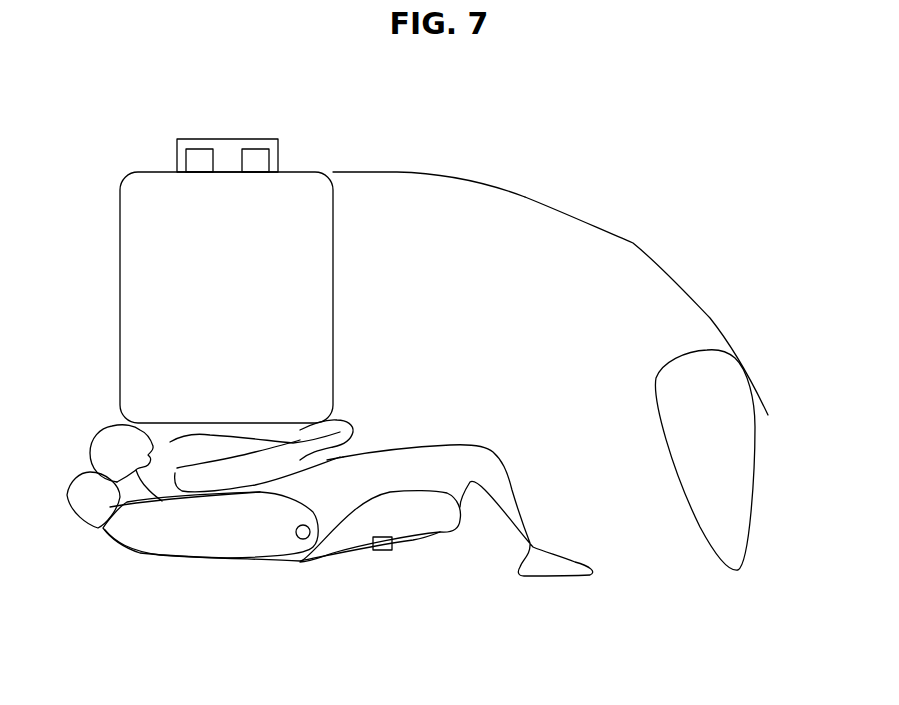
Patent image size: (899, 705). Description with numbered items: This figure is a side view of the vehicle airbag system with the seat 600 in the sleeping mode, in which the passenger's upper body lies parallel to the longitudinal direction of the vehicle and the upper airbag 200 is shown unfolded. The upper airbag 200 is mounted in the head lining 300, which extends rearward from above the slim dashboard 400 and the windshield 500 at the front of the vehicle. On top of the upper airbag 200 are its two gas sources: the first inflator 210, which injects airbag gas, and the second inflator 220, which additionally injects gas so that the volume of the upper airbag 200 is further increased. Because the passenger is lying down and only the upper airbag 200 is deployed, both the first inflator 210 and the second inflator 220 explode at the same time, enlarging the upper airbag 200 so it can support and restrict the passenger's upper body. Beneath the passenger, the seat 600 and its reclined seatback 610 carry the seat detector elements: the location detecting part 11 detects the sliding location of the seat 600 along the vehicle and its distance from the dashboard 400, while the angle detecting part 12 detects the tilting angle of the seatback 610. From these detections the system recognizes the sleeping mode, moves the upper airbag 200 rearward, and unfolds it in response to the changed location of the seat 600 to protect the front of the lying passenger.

The upper airbag 200 is at (137, 283).
The first inflator 210 is at (199, 160).
The second inflator 220 is at (259, 160).
The head lining 300 is at (397, 170).
The windshield 500 is at (633, 242).
The dashboard 400 is at (743, 467).
The seat 600 is at (347, 568).
The seatback 610 is at (217, 541).
The location detecting part 11 is at (382, 552).
The angle detecting part 12 is at (303, 540).